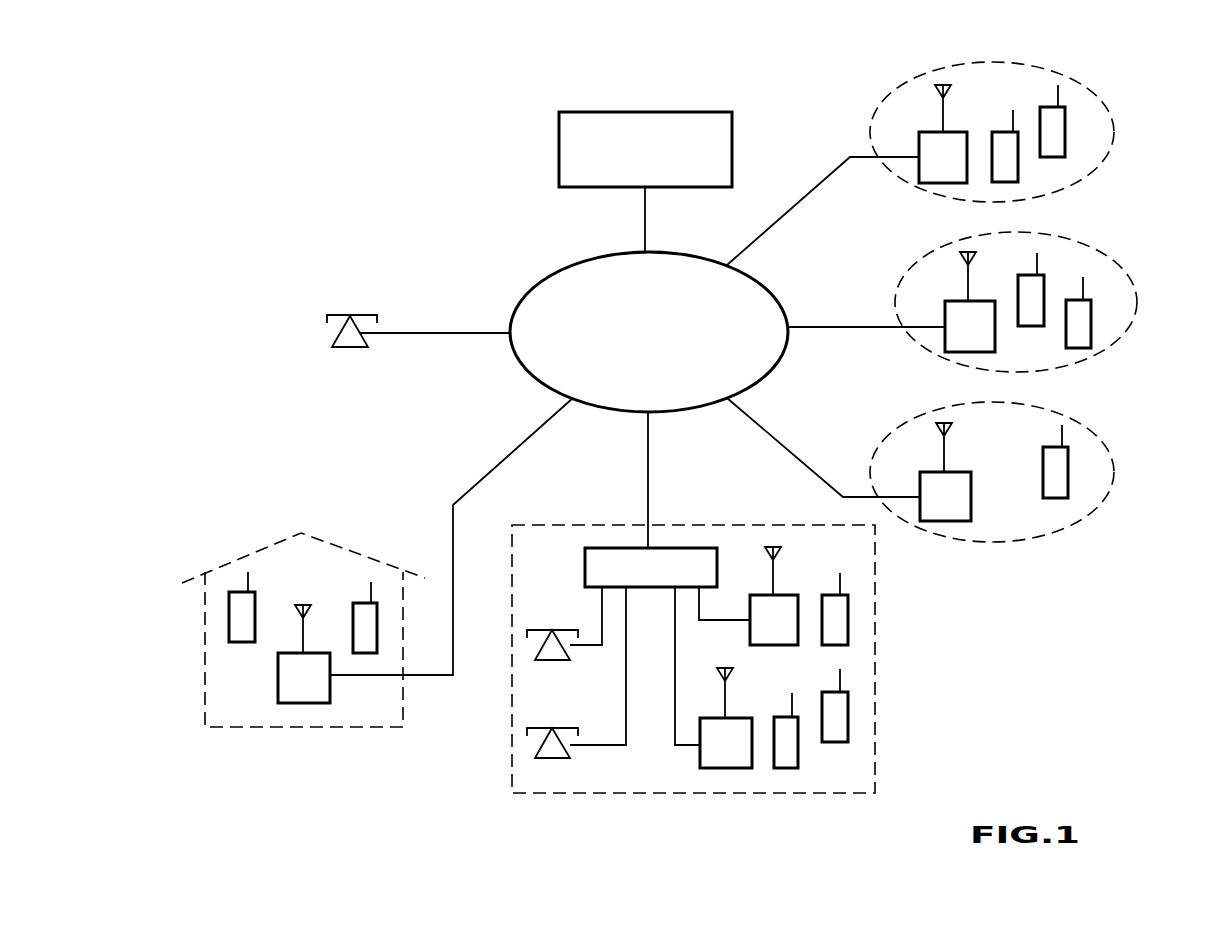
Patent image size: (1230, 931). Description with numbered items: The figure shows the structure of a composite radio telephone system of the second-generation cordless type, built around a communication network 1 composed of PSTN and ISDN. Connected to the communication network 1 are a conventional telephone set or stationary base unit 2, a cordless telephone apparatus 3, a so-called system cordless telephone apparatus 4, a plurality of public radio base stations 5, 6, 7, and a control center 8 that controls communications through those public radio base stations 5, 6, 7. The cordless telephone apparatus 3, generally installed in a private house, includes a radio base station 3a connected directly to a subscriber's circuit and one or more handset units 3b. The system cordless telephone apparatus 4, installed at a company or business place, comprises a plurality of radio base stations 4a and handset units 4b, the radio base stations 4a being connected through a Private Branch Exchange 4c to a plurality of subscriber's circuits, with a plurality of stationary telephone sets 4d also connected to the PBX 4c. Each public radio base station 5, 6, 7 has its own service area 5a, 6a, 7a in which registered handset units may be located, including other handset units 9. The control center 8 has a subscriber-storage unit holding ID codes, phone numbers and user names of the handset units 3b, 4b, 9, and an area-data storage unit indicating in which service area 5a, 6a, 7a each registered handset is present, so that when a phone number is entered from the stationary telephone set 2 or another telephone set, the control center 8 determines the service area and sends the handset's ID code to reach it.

The communication network 1 is at (540, 258).
The stationary base unit 2 is at (355, 313).
The cordless telephone apparatus 3 is at (320, 540).
The radio base station 3a is at (305, 696).
The handset units 3b is at (228, 633).
The system cordless telephone apparatus 4 is at (877, 665).
The radio base stations 4a is at (785, 600).
The handset units 4b is at (848, 620).
The Private Branch Exchange (PBX) 4c is at (695, 553).
The stationary telephone sets 4d is at (534, 656).
The public radio base station 5 is at (930, 172).
The service area 5a is at (1046, 70).
The public radio base station 6 is at (950, 342).
The service area 6a is at (1095, 250).
The public radio base station 7 is at (958, 512).
The service area 7a is at (1098, 440).
The control center 8 is at (720, 111).
The handset units 9 is at (1065, 135).